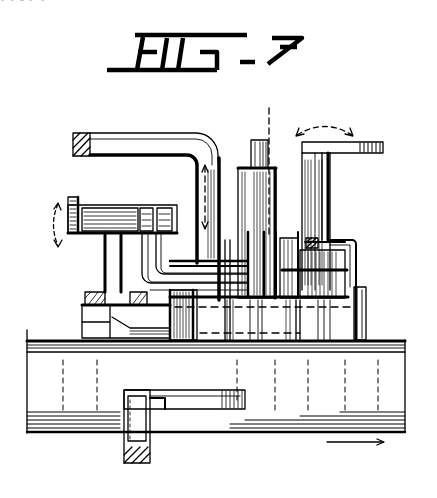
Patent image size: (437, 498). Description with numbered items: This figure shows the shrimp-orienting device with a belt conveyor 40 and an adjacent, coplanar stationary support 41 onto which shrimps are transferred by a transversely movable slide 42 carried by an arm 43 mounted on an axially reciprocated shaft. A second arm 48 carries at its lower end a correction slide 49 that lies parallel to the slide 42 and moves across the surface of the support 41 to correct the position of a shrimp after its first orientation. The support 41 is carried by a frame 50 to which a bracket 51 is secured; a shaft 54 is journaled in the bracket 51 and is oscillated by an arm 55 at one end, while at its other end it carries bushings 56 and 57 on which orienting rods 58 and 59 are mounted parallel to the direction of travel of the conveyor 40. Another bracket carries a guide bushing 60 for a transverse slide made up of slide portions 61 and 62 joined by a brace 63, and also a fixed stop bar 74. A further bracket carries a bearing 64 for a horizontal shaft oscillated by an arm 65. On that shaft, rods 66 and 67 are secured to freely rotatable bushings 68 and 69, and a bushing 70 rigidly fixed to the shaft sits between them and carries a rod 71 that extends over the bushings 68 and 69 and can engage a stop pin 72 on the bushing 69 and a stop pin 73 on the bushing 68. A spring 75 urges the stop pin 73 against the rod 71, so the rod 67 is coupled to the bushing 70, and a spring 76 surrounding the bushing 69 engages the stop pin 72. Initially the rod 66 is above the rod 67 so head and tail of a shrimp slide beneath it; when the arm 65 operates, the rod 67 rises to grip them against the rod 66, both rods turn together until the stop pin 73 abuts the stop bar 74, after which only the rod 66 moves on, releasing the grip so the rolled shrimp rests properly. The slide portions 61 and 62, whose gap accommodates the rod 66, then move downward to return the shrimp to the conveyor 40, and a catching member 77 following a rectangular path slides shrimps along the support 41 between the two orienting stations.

The belt conveyor 40 is at (51, 398).
The stationary support 41 is at (206, 322).
The slide 42 is at (163, 409).
The arm 43 is at (133, 463).
The arm 48 is at (84, 133).
The correction slide 49 is at (183, 263).
The frame 50 is at (92, 323).
The bracket 51 is at (85, 295).
The shaft 54 is at (117, 221).
The arm 55 is at (77, 197).
The bushing 56 is at (145, 208).
The bushing 57 is at (165, 208).
The rod 58 is at (145, 250).
The rod 59 is at (150, 268).
The guide bushing 60 is at (248, 172).
The slide portion 61 is at (292, 300).
The slide portion 62 is at (258, 320).
The brace 63 is at (233, 323).
The bearing 64 is at (318, 178).
The arm 65 is at (362, 143).
The rod 66 is at (367, 317).
The rod 67 is at (367, 332).
The bushing 68 is at (330, 275).
The bushing 69 is at (330, 242).
The bushing 70 is at (320, 258).
The rod 71 is at (332, 240).
The stop pin 72 is at (302, 238).
The stop pin 73 is at (323, 310).
The stop bar 74 is at (300, 307).
The spring 75 is at (337, 282).
The spring 76 is at (345, 238).
The catching member 77 is at (120, 343).